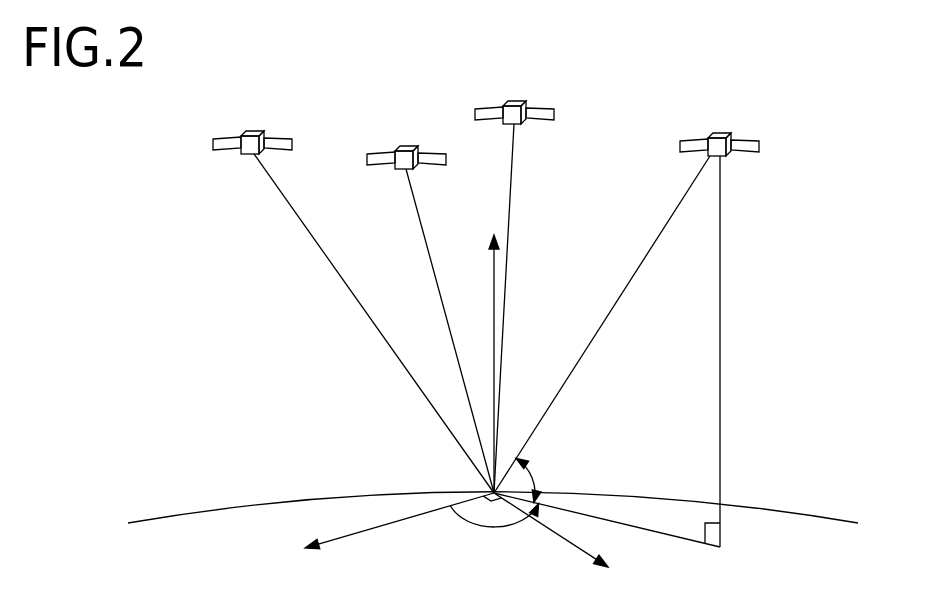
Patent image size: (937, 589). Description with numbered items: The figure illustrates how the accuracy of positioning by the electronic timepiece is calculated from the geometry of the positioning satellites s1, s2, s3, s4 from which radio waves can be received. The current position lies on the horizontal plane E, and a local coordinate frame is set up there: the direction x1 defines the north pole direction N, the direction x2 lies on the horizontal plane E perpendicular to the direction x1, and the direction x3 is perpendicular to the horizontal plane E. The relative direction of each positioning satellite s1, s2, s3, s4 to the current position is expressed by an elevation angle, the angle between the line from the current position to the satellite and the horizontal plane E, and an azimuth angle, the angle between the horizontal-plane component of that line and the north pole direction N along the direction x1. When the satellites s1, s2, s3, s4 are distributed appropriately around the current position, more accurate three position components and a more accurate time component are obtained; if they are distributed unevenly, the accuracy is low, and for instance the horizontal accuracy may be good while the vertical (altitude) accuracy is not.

The positioning satellite s1 is at (727, 135).
The positioning satellite s2 is at (522, 103).
The positioning satellite s3 is at (411, 148).
The positioning satellite s4 is at (258, 133).
The direction x1 is at (373, 529).
The direction x2 is at (563, 541).
The direction x3 is at (491, 352).
The horizontal plane E is at (481, 516).